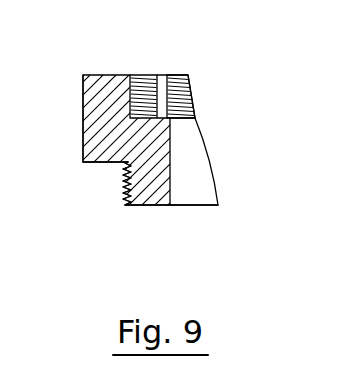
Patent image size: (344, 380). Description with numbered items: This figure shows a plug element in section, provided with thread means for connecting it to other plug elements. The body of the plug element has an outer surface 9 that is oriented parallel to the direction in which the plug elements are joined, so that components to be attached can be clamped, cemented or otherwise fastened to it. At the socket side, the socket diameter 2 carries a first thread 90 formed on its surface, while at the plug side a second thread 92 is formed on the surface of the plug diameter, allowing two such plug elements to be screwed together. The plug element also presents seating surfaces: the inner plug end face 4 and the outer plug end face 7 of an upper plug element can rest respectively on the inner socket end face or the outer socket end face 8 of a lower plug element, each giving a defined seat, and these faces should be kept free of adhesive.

The socket diameter 2 is at (145, 77).
The inner plug end face 4 is at (150, 207).
The outer plug end face 7 is at (102, 165).
The outer socket end face 8 is at (101, 84).
The outer surface 9 is at (82, 142).
The first thread 90 is at (190, 93).
The second thread 92 is at (127, 193).